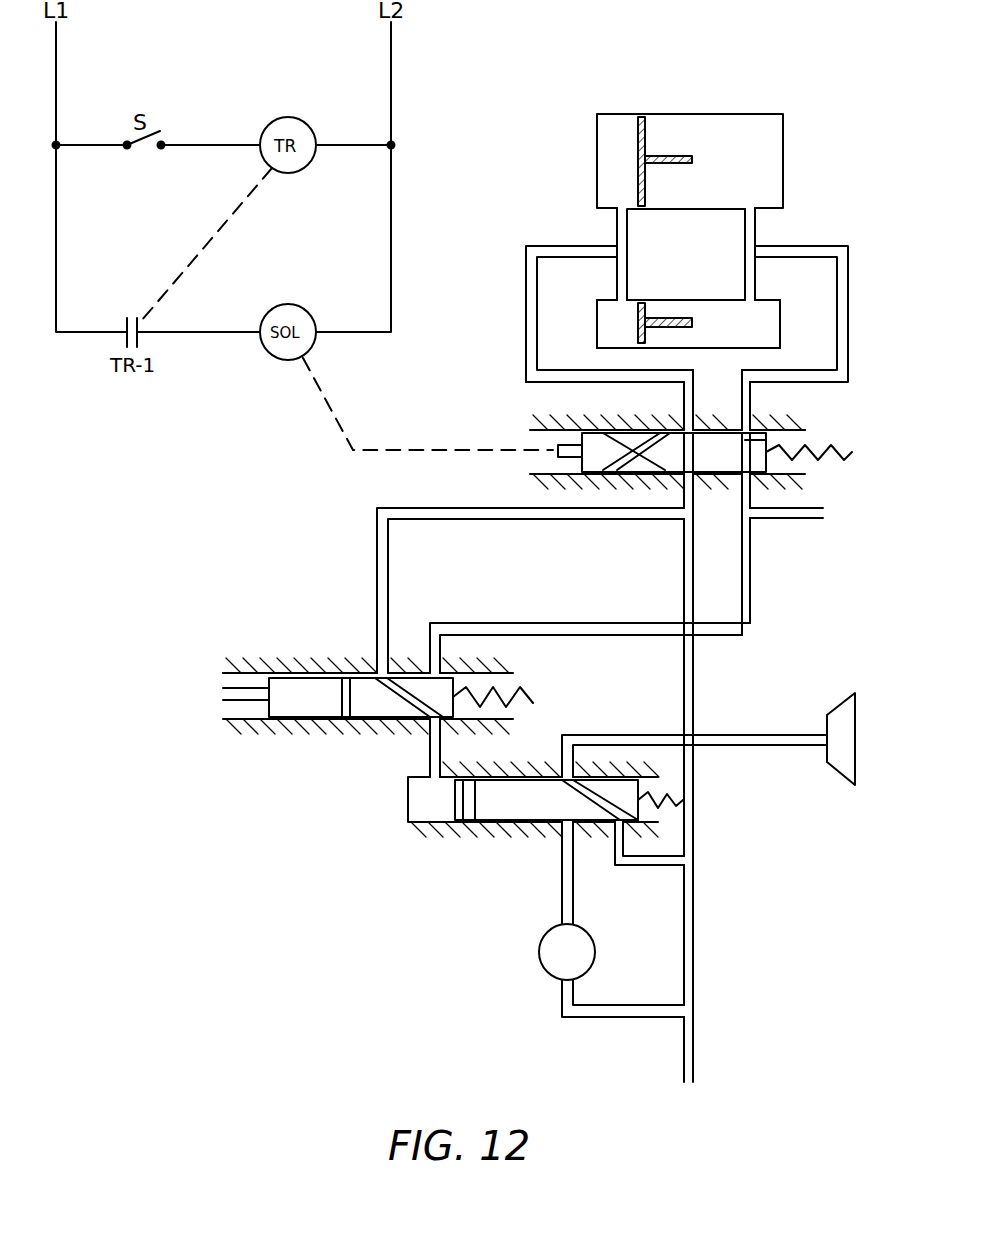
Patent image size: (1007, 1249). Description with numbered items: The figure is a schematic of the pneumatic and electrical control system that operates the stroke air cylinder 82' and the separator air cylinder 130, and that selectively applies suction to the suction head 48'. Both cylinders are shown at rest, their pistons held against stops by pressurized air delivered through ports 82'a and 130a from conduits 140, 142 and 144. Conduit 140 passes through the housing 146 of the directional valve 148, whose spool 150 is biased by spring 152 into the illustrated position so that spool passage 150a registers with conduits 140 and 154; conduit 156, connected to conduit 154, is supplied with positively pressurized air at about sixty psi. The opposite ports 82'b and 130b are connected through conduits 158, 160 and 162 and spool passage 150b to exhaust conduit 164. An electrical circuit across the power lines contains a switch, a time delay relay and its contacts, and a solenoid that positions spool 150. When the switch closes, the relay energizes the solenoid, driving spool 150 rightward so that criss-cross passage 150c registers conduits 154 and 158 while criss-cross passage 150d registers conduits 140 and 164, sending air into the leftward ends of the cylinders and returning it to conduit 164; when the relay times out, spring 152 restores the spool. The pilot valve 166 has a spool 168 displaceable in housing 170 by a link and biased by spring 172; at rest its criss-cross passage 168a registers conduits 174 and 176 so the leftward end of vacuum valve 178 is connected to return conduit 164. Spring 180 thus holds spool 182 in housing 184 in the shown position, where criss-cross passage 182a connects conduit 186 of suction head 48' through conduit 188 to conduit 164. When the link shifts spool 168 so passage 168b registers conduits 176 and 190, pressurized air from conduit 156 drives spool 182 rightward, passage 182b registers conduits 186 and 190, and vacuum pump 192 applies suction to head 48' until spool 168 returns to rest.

The air cylinder 82' is at (690, 197).
The port 82'a is at (804, 232).
The port 82'b is at (575, 232).
The air cylinder 130 is at (699, 298).
The port 130a is at (751, 299).
The port 130b is at (617, 299).
The conduit 140 is at (849, 283).
The conduit 142 is at (756, 228).
The conduit 144 is at (755, 275).
The housing 146 is at (777, 423).
The directional valve 148 is at (530, 441).
The spool 150 is at (722, 437).
The spool passage 150a is at (767, 442).
The spool passage 150b is at (688, 453).
The spool criss-cross passage 150c is at (625, 442).
The spool criss-cross passage 150d is at (640, 442).
The spring 152 is at (836, 462).
The conduit 154 is at (750, 498).
The conduit 156 is at (806, 508).
The conduit 158 is at (526, 286).
The conduit 160 is at (628, 227).
The conduit 162 is at (617, 275).
The exhaust conduit 164 is at (684, 562).
The pilot valve 166 is at (223, 681).
The spool 168 is at (305, 710).
The criss-cross spool passage 168a is at (412, 700).
The spool passage 168b is at (342, 697).
The valve housing 170 is at (275, 667).
The spring 172 is at (527, 702).
The conduit 174 is at (389, 552).
The conduit 176 is at (441, 747).
The vacuum valve 178 is at (404, 815).
The spring 180 is at (683, 802).
The spool 182 is at (487, 810).
The criss-cross spool passage 182a is at (583, 797).
The spool passage 182b is at (470, 798).
The housing 184 is at (598, 770).
The conduit 186 is at (735, 737).
The conduit 188 is at (630, 862).
The conduit 190 is at (598, 623).
The vacuum pump 192 is at (595, 955).
The suction head 48' is at (839, 714).